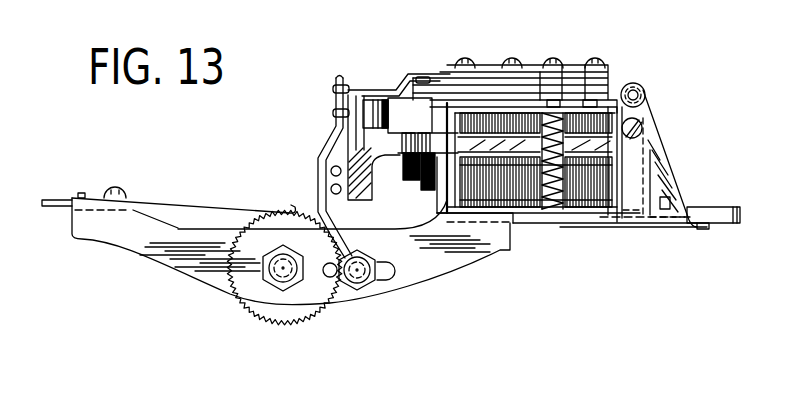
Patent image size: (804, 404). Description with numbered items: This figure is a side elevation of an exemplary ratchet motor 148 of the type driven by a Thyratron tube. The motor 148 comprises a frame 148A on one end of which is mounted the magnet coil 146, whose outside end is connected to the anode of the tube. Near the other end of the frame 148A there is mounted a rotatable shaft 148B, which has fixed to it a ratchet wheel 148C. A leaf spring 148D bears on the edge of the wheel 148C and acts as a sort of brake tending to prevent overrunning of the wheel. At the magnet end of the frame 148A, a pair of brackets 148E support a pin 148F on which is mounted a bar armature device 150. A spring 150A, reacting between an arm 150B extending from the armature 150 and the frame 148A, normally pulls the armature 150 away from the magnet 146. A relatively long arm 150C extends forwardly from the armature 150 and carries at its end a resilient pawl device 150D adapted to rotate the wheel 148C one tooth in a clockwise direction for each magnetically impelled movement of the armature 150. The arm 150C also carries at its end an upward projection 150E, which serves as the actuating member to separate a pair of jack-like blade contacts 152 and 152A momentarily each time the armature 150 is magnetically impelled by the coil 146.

The magnet coil 146 is at (527, 215).
The ratchet motor 148 is at (322, 125).
The frame 148A is at (422, 278).
The rotatable shaft 148B is at (268, 286).
The ratchet wheel 148C is at (288, 316).
The leaf spring 148D is at (174, 202).
The brackets 148E is at (660, 150).
The pin 148F is at (644, 89).
The bar armature device 150 is at (650, 168).
The spring 150A is at (568, 146).
The arm 150B is at (563, 113).
The long arm 150C is at (458, 146).
The resilient pawl device 150D is at (328, 141).
The upward projection 150E is at (364, 106).
The blade contact 152 is at (420, 77).
The blade contact 152A is at (406, 72).